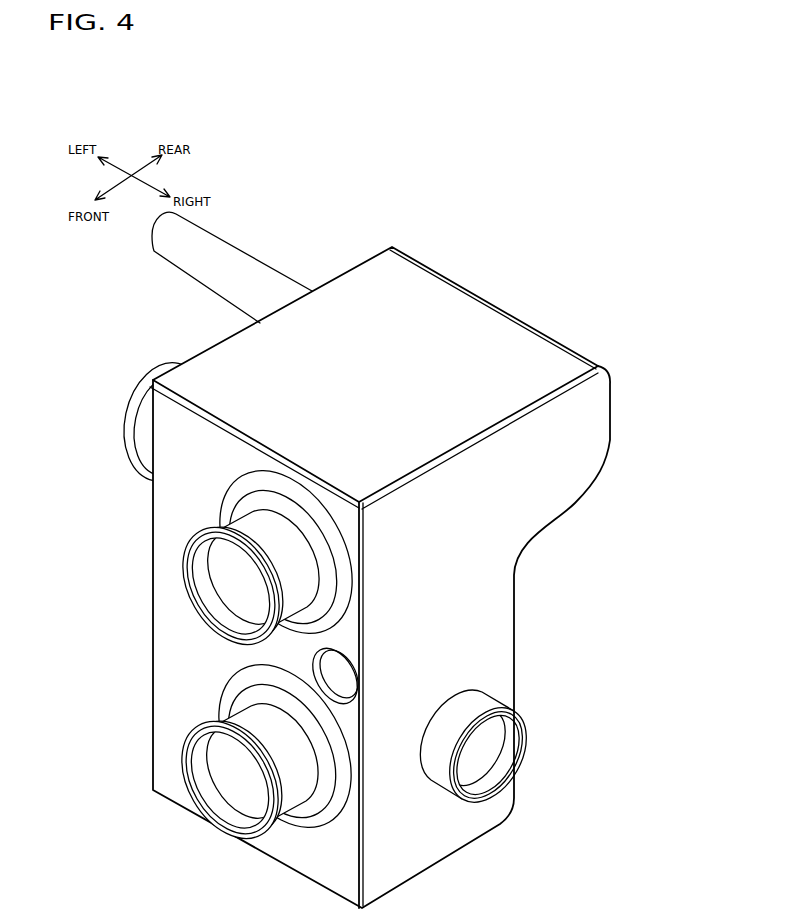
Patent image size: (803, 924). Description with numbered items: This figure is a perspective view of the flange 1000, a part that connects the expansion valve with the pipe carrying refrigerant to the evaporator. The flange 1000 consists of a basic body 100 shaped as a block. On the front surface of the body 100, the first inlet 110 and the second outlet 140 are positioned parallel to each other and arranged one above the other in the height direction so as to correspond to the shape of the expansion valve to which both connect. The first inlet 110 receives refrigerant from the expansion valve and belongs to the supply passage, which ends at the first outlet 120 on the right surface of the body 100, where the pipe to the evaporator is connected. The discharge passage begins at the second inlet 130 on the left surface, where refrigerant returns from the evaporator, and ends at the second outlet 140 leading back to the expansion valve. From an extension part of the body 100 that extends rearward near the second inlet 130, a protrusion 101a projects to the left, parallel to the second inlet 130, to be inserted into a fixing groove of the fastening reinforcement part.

The flange 1000 is at (551, 234).
The body 100 is at (526, 350).
The protrusion 101a is at (243, 267).
The first inlet 110 is at (217, 817).
The first outlet 120 is at (477, 778).
The second inlet 130 is at (140, 412).
The second outlet 140 is at (195, 582).